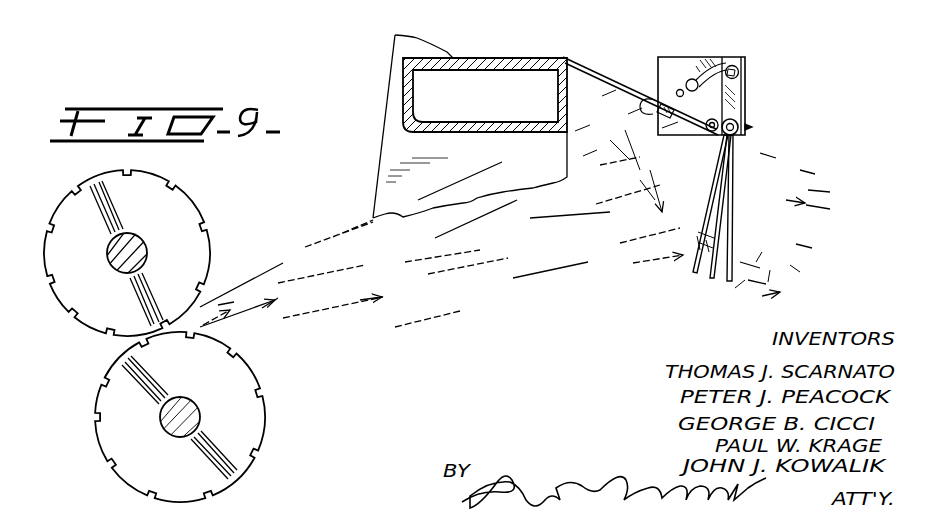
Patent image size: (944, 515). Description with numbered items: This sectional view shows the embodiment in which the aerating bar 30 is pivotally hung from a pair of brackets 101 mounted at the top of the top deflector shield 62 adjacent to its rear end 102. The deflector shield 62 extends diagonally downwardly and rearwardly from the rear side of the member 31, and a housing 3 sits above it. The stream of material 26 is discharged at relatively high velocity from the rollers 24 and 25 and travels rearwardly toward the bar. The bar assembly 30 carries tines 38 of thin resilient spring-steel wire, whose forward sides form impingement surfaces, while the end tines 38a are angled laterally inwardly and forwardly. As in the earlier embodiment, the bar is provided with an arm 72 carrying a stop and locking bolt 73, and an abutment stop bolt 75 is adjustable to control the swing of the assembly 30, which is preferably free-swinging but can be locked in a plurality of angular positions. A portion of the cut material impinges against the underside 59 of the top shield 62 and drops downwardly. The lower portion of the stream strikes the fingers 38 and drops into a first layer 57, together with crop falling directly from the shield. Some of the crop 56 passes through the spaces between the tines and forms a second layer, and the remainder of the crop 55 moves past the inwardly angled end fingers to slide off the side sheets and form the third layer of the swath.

The housing 3 is at (490, 62).
The roller 24 is at (182, 227).
The roller 25 is at (240, 421).
The stream of material 26 is at (423, 322).
The aerating bar 30 is at (750, 127).
The member 31 is at (408, 105).
The tines 38 is at (730, 282).
The end tines 38a is at (698, 233).
The branch of material 55 is at (792, 170).
The branch of material 56 is at (770, 215).
The branch of material 57 is at (620, 260).
The underside of top deflector shield 59 is at (667, 104).
The top deflector shield 62 is at (588, 62).
The arm 72 is at (734, 100).
The stop and locking bolt 73 is at (737, 68).
The adjustable stop bolt 75 is at (691, 79).
The brackets 101 is at (733, 36).
The rear end of deflector shield 102 is at (713, 131).